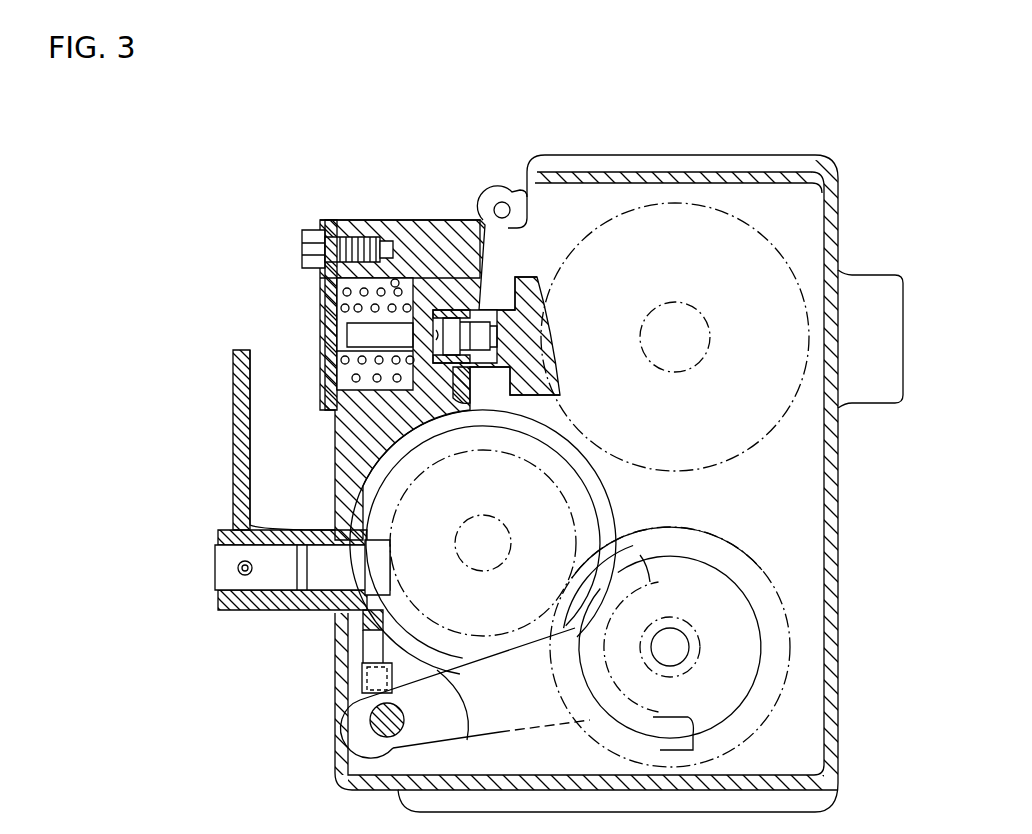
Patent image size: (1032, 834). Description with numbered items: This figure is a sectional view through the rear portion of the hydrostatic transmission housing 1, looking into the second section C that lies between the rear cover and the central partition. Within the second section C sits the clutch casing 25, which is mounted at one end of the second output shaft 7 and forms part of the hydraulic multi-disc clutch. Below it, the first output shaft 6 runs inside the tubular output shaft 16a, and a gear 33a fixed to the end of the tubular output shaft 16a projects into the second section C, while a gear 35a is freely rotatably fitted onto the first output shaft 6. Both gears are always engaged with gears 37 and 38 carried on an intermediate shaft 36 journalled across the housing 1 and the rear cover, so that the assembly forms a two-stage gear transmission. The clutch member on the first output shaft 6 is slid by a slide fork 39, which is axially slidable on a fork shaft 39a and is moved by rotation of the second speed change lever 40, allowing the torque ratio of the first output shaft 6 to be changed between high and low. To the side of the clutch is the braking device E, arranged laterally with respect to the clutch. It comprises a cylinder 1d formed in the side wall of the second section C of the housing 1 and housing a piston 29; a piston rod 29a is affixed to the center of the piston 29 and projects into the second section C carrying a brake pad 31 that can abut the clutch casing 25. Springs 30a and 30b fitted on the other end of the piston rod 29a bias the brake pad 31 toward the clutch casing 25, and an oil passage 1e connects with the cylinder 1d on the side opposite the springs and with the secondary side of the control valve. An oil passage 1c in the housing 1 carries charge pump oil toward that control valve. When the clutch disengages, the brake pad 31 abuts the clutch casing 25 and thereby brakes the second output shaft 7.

The housing 1 is at (840, 250).
The oil passage 1c is at (500, 203).
The cylinder 1d is at (402, 245).
The oil passage 1e is at (478, 370).
The first output shaft 6 is at (692, 668).
The second output shaft 7 is at (710, 337).
The tubular output shaft 16a is at (690, 640).
The clutch casing 25 is at (626, 213).
The piston 29 is at (427, 272).
The piston rod 29a is at (347, 335).
The spring 30a is at (338, 296).
The spring 30b is at (337, 360).
The brake pad 31 is at (539, 280).
The gear 33a is at (683, 553).
The gear 35a is at (782, 590).
The intermediate shaft 36 is at (505, 515).
The gear 37 is at (582, 465).
The gear 38 is at (590, 518).
The slide fork 39 is at (343, 757).
The fork shaft 39a is at (370, 718).
The second speed change lever 40 is at (233, 432).
The second section C is at (810, 230).
The braking device E is at (254, 290).